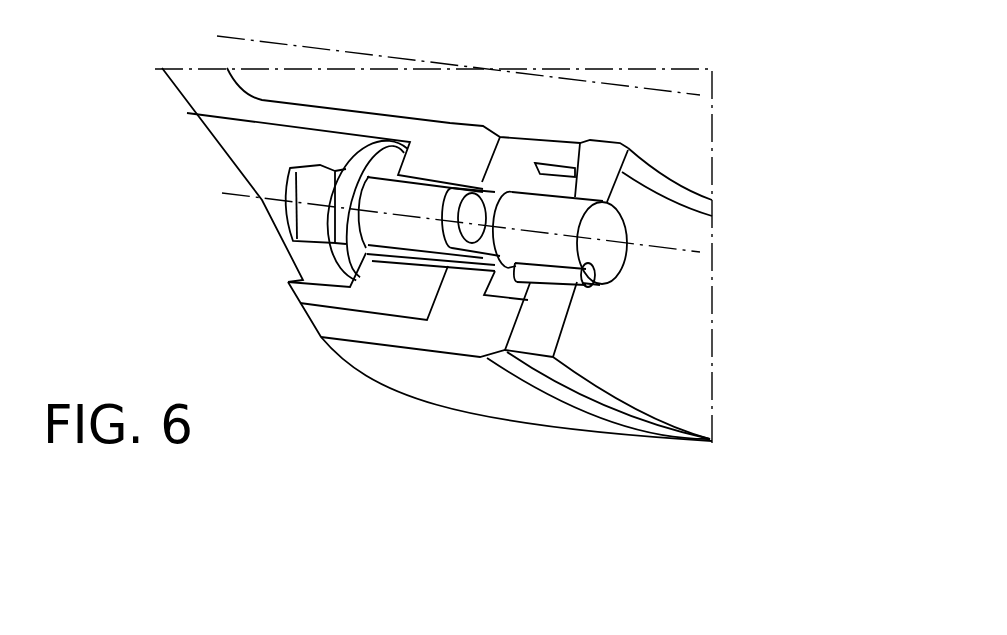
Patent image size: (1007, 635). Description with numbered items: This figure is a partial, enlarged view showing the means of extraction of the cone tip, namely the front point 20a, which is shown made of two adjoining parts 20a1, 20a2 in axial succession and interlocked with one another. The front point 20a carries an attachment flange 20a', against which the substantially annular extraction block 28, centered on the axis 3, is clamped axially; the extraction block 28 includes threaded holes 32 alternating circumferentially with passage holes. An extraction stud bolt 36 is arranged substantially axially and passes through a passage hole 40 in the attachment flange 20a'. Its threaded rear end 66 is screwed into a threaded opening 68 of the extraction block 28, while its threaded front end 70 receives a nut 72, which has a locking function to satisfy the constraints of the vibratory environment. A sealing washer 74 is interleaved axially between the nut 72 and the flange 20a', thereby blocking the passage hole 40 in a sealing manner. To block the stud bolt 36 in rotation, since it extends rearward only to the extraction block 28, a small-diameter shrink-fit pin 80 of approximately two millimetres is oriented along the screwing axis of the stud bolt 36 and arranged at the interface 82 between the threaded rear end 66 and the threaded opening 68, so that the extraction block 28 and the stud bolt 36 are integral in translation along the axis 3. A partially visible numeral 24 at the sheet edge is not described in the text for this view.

The axis 3 is at (680, 97).
The front point 20a is at (109, 327).
The first adjoining part of the cone tip 20a1 is at (283, 258).
The second adjoining part of the cone tip 20a2 is at (333, 358).
The attachment flange 20a' is at (404, 373).
The extraction block 28 is at (693, 335).
The threaded hole 32 is at (548, 216).
The extraction stud bolt 36 is at (477, 218).
The passage hole 40 is at (427, 182).
The threaded rear end 66 is at (563, 247).
The threaded opening 68 is at (600, 221).
The threaded front end 70 is at (296, 185).
The nut 72 is at (310, 232).
The sealing washer 74 is at (370, 163).
The shrink-fit pin 80 is at (550, 278).
The interface 82 is at (549, 172).
The cross member 24 is at (816, 629).